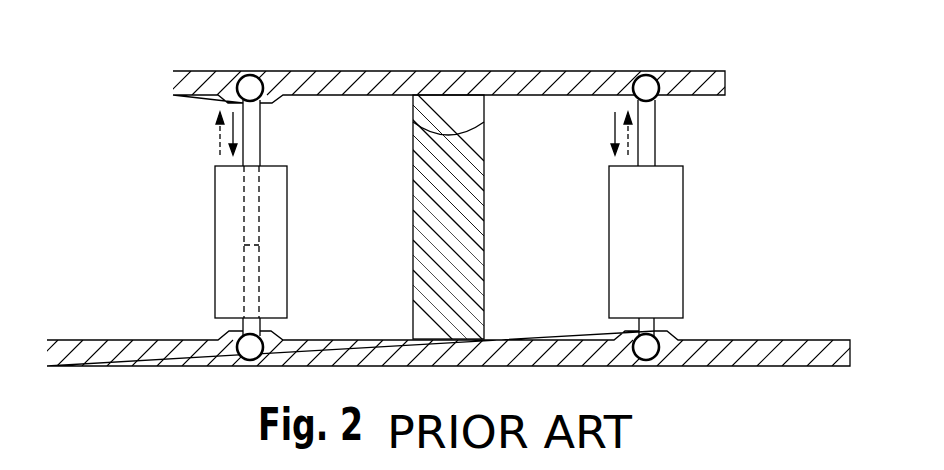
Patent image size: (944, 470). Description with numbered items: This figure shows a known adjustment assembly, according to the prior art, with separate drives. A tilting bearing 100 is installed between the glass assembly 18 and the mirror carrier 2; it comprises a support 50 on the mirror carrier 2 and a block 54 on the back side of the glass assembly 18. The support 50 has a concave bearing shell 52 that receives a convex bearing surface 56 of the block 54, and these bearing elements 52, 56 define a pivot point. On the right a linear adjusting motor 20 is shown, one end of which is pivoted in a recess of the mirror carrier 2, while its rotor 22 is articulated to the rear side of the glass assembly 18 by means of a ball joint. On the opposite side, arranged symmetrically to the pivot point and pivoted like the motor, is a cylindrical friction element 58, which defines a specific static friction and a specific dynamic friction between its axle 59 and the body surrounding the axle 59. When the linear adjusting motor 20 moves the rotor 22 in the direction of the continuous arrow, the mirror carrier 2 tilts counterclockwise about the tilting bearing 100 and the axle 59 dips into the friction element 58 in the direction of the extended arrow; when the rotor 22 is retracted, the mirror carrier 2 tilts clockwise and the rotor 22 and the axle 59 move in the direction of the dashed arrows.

The mirror carrier 2 is at (577, 352).
The glass assembly 18 is at (462, 80).
The linear adjusting motor 20 is at (668, 250).
The rotor 22 is at (648, 142).
The support 50 is at (450, 233).
The concave bearing shell 52 is at (432, 137).
The block 54 is at (440, 113).
The convex bearing surface 56 is at (415, 122).
The friction element 58 is at (270, 252).
The axle 59 is at (272, 142).
The tilting bearing 100 is at (489, 128).